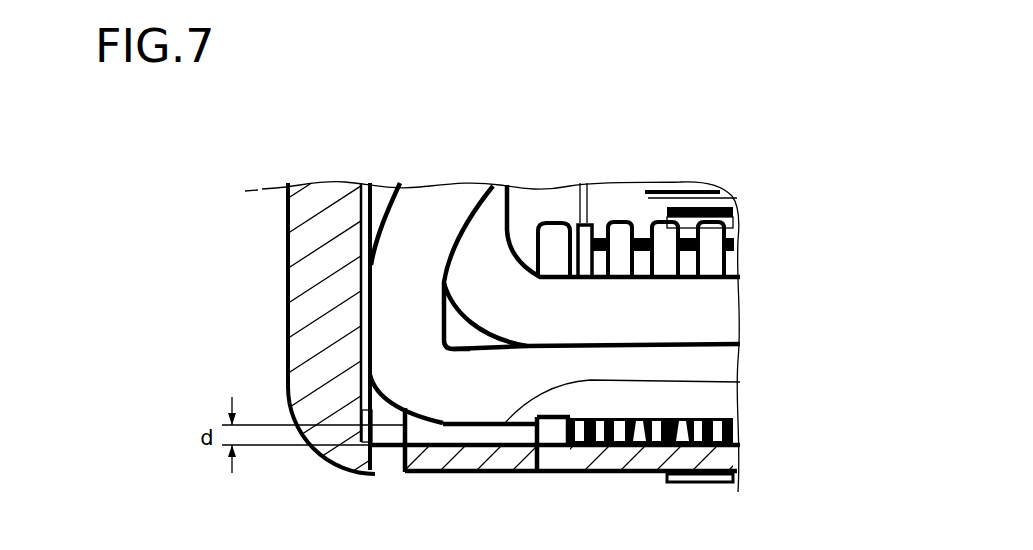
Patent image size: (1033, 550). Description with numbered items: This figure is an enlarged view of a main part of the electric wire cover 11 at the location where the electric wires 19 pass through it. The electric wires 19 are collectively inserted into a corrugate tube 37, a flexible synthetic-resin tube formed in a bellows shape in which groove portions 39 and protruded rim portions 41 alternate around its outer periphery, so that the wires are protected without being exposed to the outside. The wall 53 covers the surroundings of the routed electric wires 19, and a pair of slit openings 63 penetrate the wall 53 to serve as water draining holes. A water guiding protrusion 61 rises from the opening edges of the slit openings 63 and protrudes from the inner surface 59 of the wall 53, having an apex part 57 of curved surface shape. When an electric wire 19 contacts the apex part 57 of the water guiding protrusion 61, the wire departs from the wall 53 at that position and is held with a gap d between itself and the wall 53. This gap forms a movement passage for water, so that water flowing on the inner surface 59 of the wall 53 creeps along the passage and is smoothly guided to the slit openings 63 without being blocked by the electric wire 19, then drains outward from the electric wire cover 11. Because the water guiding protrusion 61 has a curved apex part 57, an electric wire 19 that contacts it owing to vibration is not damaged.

The electric wire cover 11 is at (262, 334).
The electric wires 19 is at (483, 245).
The corrugate tube 37 is at (625, 208).
The groove portions 39 is at (597, 220).
The protruded rim portions 41 is at (633, 450).
The wall 53 is at (280, 248).
The apex part 57 is at (468, 423).
The inner surface 59 is at (740, 382).
The water guiding protrusion 61 is at (441, 390).
The slit openings 63 is at (383, 467).